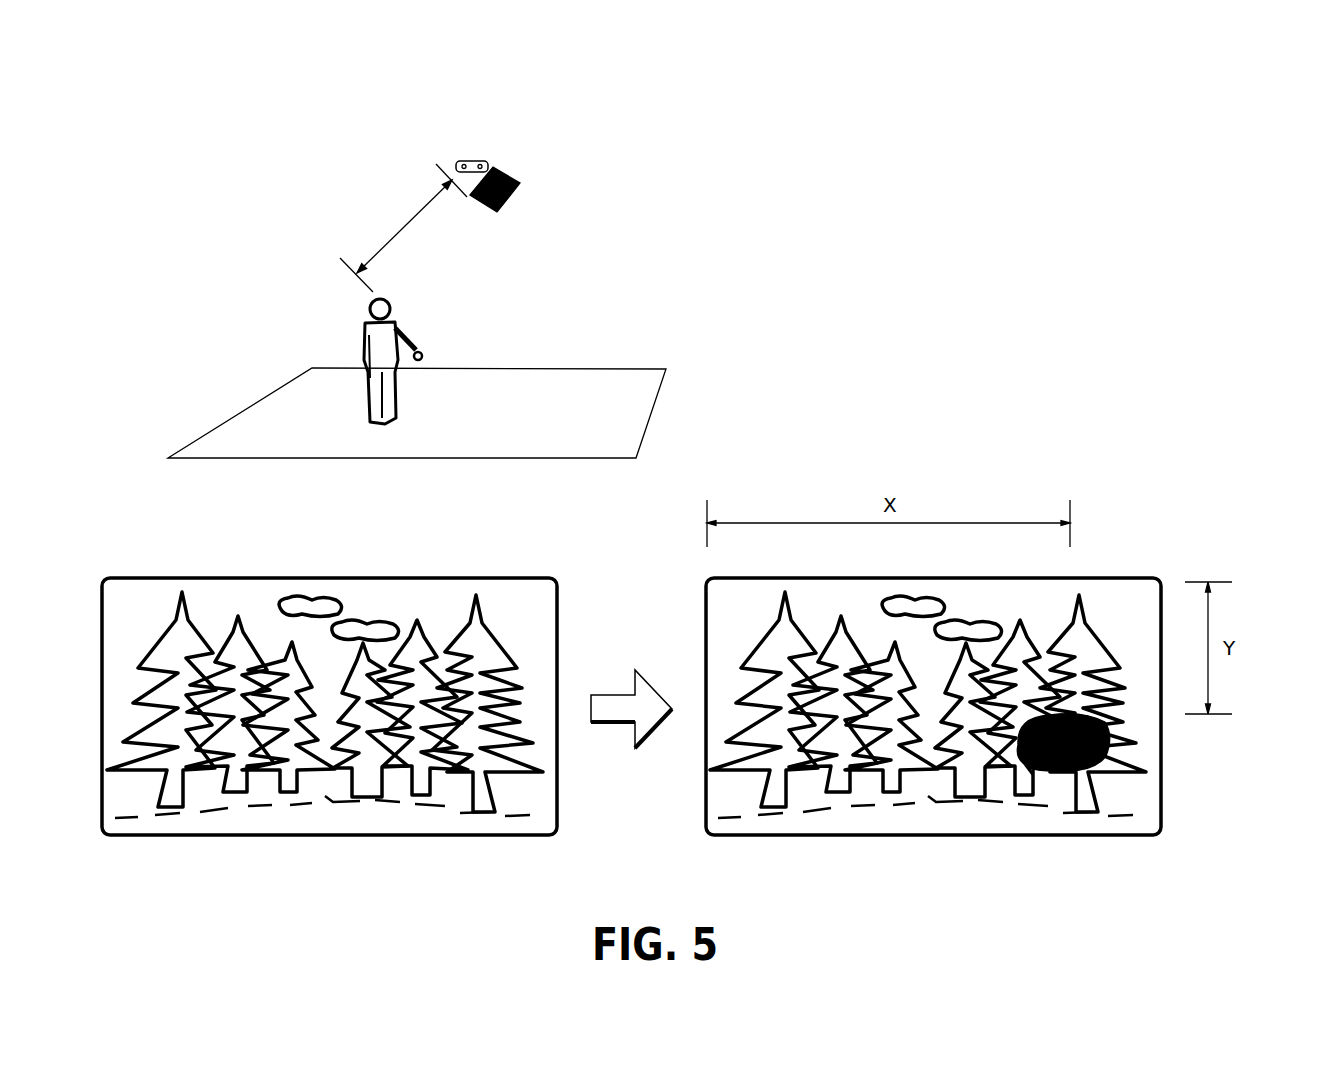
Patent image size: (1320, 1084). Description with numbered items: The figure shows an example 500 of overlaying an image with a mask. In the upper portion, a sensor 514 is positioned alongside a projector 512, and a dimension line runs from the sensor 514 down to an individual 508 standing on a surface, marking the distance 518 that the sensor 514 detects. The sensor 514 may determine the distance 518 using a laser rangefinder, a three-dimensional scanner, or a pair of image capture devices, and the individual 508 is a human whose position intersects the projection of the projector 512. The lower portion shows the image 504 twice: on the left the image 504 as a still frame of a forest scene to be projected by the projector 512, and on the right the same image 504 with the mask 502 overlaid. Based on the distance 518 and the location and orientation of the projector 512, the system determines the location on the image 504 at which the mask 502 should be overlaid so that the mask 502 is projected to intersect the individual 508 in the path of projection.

The example 500 is at (1258, 142).
The mask 502 is at (1081, 756).
The image 504 is at (158, 611).
The individual 508 is at (400, 370).
The projector 512 is at (507, 197).
The sensor 514 is at (470, 162).
The distance 518 is at (347, 279).